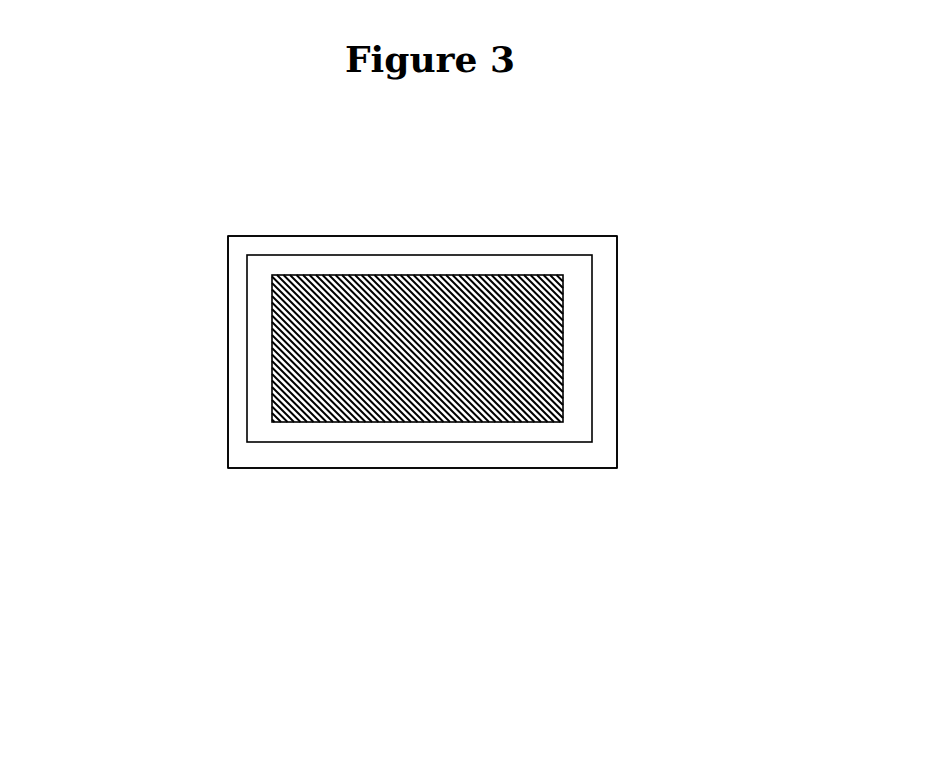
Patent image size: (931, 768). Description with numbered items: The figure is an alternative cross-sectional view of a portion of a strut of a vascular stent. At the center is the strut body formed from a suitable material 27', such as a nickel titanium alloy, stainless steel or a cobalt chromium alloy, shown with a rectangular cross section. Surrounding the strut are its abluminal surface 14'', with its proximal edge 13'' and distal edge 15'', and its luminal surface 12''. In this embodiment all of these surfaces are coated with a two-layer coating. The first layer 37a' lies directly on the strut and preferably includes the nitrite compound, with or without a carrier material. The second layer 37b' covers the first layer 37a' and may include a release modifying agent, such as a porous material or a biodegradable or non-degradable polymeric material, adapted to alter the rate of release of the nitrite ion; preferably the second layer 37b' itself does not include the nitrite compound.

The luminal surface 12'' is at (422, 563).
The proximal edge 13'' is at (148, 352).
The abluminal surface 14'' is at (422, 182).
The distal edge 15'' is at (711, 352).
The strut material 27' is at (417, 424).
The first layer 37a' is at (419, 424).
The second layer 37b' is at (438, 428).